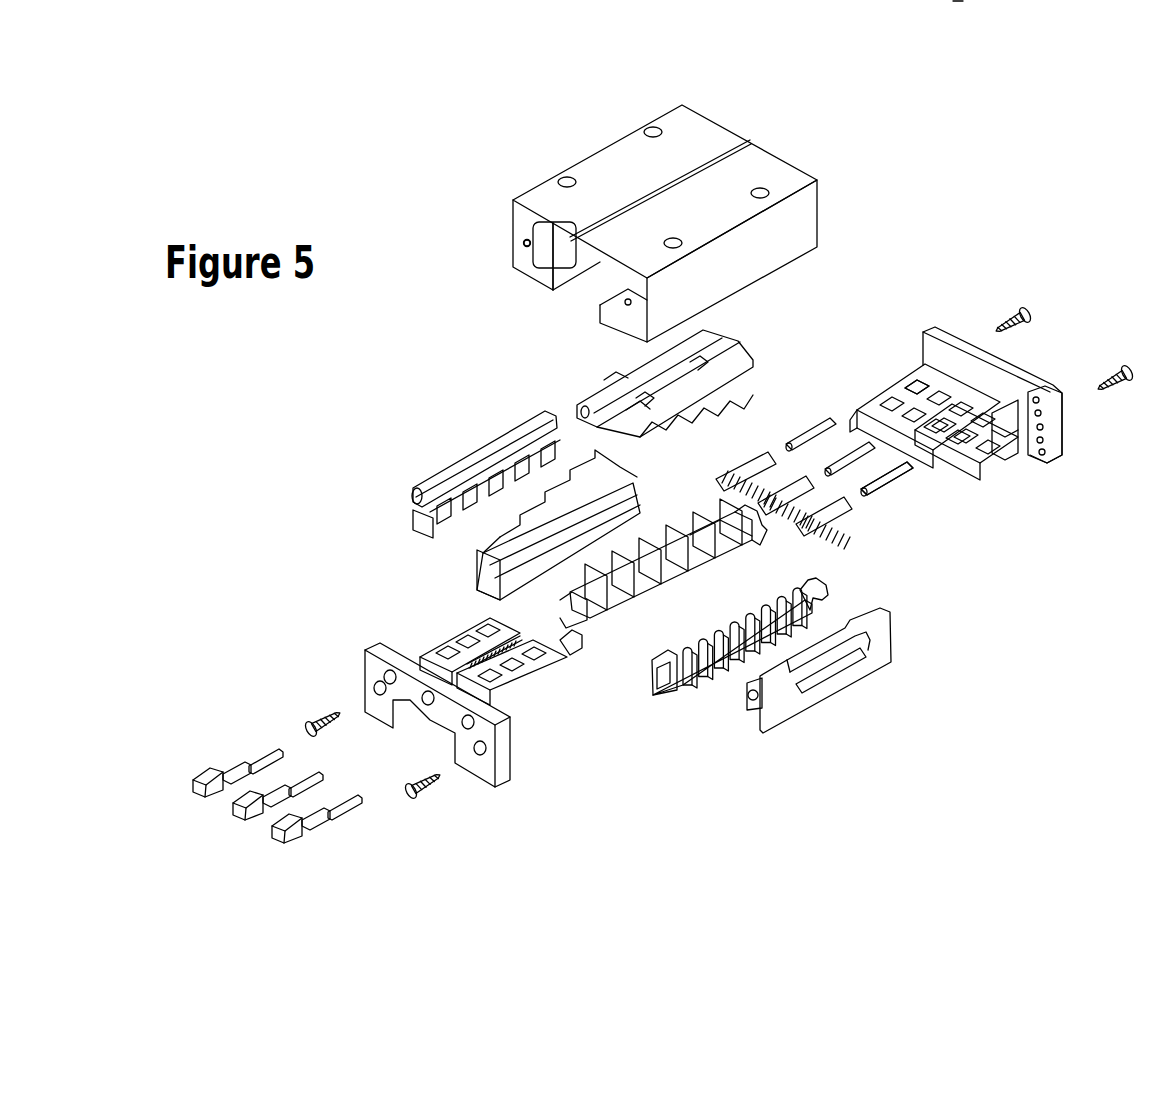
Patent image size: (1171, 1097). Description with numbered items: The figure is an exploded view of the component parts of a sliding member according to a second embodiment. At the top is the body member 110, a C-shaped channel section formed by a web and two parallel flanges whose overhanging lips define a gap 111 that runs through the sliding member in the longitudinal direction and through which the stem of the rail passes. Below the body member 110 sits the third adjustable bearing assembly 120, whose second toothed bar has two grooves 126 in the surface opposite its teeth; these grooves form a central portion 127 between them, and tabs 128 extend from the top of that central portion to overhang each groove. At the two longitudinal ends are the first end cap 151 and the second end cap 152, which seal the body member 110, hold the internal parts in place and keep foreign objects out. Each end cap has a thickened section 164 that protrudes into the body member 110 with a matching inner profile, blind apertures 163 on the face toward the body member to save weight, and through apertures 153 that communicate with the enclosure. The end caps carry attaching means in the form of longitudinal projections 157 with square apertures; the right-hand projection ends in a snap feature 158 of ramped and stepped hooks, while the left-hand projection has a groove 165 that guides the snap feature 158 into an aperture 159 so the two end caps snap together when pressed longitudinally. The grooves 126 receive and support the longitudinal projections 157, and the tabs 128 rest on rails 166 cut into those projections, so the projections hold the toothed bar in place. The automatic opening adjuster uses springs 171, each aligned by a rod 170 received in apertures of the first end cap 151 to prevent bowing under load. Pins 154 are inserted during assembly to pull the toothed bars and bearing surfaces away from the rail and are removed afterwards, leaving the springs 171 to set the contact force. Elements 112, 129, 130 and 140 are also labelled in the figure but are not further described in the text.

The body member 110 is at (773, 150).
The gap 111 is at (578, 300).
The cover aperture 112 is at (524, 243).
The third adjustable bearing assembly 120 is at (690, 543).
The grooves 126 is at (632, 413).
The central portion 127 is at (730, 333).
The tabs 128 is at (693, 362).
The carrier bar notch 129 is at (645, 402).
The contact module 130 is at (753, 613).
The bracket 140 is at (427, 522).
The first end cap 151 is at (1067, 410).
The second end cap 152 is at (467, 773).
The apertures 153 is at (383, 673).
The pins 154 is at (233, 767).
The longitudinal projections 157 is at (923, 367).
The snap feature 158 is at (577, 637).
The aperture 159 is at (487, 628).
The blind apertures 163 is at (1043, 400).
The thickened section 164 is at (1015, 405).
The groove 165 is at (913, 425).
The rails 166 is at (920, 400).
The rod 170 is at (873, 490).
The spring 171 is at (837, 517).